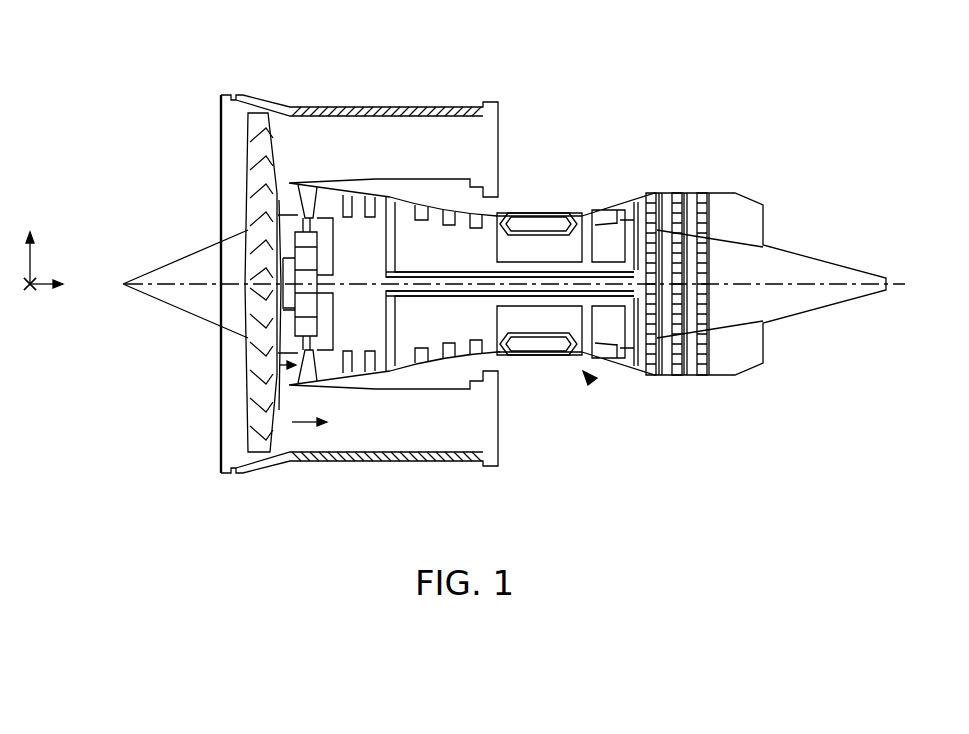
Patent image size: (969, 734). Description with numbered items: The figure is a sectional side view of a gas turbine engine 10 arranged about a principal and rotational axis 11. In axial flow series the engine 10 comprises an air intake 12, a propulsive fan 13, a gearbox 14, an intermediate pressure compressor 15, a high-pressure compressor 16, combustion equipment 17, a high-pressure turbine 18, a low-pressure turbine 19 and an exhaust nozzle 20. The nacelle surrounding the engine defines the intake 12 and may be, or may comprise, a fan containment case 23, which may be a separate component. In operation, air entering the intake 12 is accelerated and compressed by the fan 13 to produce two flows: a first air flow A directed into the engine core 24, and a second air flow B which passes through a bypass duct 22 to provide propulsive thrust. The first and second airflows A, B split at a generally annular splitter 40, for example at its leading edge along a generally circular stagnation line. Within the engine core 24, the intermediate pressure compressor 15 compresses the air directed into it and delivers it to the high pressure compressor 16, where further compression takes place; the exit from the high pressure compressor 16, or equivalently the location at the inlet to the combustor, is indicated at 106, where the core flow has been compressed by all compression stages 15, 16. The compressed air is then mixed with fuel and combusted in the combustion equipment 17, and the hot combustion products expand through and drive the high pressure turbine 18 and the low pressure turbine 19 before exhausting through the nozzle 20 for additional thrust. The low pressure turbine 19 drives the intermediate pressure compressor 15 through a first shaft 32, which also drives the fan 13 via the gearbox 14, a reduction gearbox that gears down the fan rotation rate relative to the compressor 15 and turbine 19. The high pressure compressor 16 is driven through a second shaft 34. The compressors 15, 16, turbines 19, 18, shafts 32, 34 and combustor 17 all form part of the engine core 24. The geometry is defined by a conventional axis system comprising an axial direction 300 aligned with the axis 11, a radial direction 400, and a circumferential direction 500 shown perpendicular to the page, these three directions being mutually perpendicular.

The gas turbine engine 10 is at (782, 92).
The principal and rotational axis 11 is at (123, 283).
The air intake 12 is at (200, 144).
The propulsive fan 13 is at (258, 403).
The gearbox 14 is at (315, 345).
The intermediate pressure compressor 15 is at (353, 200).
The high-pressure compressor 16 is at (487, 240).
The combustion equipment 17 is at (535, 345).
The high-pressure turbine 18 is at (627, 215).
The low-pressure turbine 19 is at (682, 197).
The exhaust nozzle 20 is at (752, 228).
The bypass duct 22 is at (480, 135).
The fan containment case 23 is at (410, 107).
The engine core 24 is at (588, 380).
The first shaft 32 is at (582, 280).
The second shaft 34 is at (537, 270).
The splitter 40 is at (289, 183).
The exit from the high pressure compressor 106 is at (500, 352).
The first air flow A is at (277, 407).
The second air flow B is at (302, 428).
The axial direction 300 is at (71, 284).
The radial direction 400 is at (38, 245).
The circumferential direction 500 is at (40, 303).